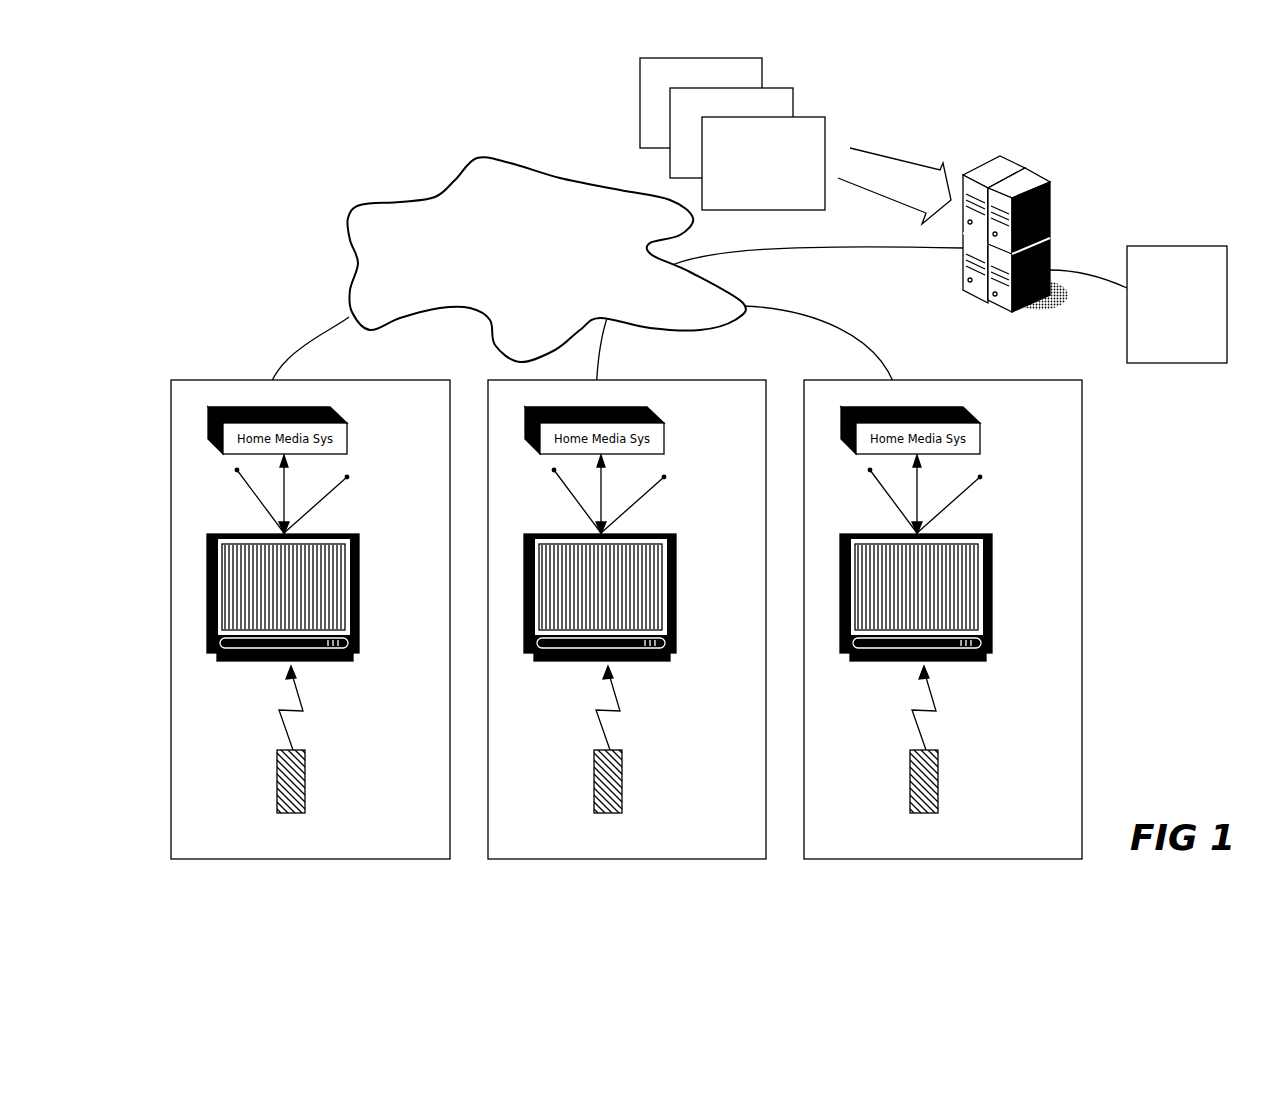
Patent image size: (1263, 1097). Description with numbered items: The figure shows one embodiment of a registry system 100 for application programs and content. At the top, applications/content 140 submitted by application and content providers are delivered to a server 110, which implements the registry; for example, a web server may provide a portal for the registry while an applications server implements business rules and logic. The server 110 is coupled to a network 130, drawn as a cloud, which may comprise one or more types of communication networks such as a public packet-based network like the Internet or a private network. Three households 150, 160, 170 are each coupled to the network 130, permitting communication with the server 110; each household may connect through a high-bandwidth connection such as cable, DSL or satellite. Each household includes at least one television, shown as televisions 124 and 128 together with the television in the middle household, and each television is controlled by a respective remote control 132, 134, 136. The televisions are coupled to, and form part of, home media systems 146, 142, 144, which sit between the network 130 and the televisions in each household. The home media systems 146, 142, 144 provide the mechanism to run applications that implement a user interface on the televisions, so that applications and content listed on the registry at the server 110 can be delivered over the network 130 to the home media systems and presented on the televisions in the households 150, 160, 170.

The registry system 100 is at (1161, 95).
The server 110 is at (1015, 260).
The network 130 is at (497, 278).
The applications/content 140 is at (747, 173).
The home media system 142 is at (633, 430).
The home media system 144 is at (949, 430).
The home media system 146 is at (355, 438).
The television 124 is at (368, 593).
The television 128 is at (953, 558).
The remote control 132 is at (322, 783).
The remote control 134 is at (609, 739).
The remote control 136 is at (925, 739).
The household 150 is at (388, 847).
The household 160 is at (627, 619).
The household 170 is at (943, 619).